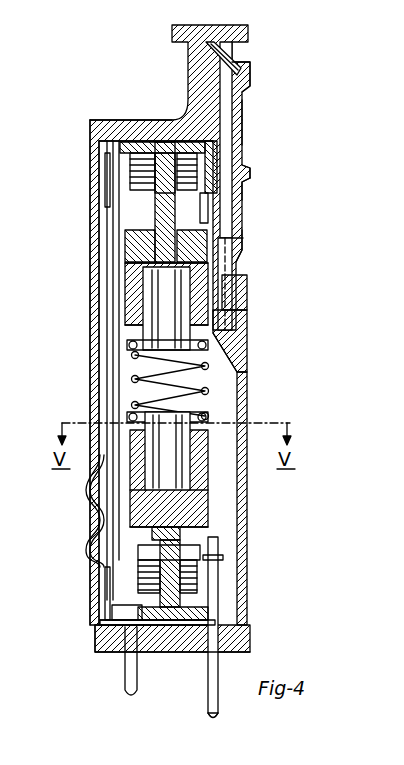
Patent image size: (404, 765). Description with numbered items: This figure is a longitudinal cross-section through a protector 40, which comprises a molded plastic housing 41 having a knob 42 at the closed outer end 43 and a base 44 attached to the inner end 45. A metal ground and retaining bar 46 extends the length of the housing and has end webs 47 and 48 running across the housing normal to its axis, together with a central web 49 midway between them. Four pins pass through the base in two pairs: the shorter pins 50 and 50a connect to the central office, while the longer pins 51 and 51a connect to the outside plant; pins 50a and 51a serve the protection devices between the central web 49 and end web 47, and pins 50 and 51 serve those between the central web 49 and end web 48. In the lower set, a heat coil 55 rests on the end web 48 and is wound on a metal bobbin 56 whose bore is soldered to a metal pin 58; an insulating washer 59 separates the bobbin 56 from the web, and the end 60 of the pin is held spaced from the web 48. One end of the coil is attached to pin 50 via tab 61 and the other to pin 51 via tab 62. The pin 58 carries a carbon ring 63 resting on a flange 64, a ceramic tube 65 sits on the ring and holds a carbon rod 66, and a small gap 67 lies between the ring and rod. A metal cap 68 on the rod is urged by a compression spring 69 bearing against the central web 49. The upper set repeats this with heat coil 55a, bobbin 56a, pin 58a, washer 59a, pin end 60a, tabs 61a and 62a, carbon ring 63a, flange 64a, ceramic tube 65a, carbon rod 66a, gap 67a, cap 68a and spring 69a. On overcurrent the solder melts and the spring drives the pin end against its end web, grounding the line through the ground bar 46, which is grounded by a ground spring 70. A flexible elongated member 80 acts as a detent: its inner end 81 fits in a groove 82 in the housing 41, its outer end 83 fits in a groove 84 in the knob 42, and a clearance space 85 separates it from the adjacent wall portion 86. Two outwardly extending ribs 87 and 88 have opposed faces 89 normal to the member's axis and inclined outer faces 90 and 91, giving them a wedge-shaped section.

The protector 40 is at (86, 118).
The molded plastic housing 41 is at (99, 380).
The knob 42 is at (240, 33).
The closed outer end 43 is at (140, 128).
The base 44 is at (246, 632).
The inner end 45 is at (240, 612).
The ground and retaining bar 46 is at (118, 360).
The end web 47 is at (150, 145).
The end web 48 is at (150, 653).
The central web 49 is at (208, 385).
The pin 50 is at (128, 685).
The pin 50a is at (108, 160).
The pin 51 is at (220, 708).
The pin 51a is at (206, 210).
The heat coil 55 is at (192, 583).
The heat coil 55a is at (140, 185).
The metal bobbin 56 is at (190, 568).
The metal bobbin 56a is at (140, 170).
The metal pin 58 is at (195, 530).
The metal pin 58a is at (130, 205).
The insulating washer 59 is at (190, 655).
The insulating washer 59a is at (140, 150).
The end of pin 60 is at (163, 655).
The end of pin 60a is at (165, 160).
The tab 61 is at (115, 610).
The tab 61a is at (118, 175).
The tab 62 is at (190, 548).
The tab 62a is at (213, 190).
The carbon ring 63 is at (205, 512).
The carbon ring 63a is at (130, 240).
The flange 64 is at (130, 540).
The flange 64a is at (125, 222).
The ceramic tube 65 is at (135, 490).
The ceramic tube 65a is at (130, 285).
The carbon rod 66 is at (207, 430).
The carbon rod 66a is at (135, 297).
The gap 67 is at (200, 495).
The gap 67a is at (135, 262).
The metal cap 68 is at (130, 415).
The metal cap 68a is at (130, 342).
The compression spring 69 is at (232, 398).
The compression spring 69a is at (226, 355).
The ground spring 70 is at (95, 505).
The flexible elongated member 80 is at (241, 250).
The inner end 81 is at (236, 285).
The groove or slot 82 is at (236, 300).
The outer end 83 is at (245, 70).
The groove or slot 84 is at (216, 45).
The clearance space 85 is at (226, 90).
The wall portion 86 is at (220, 232).
The rib 87 is at (242, 128).
The rib 88 is at (243, 183).
The opposed faces 89 is at (249, 170).
The outer face 90 is at (241, 110).
The outer face 91 is at (238, 200).